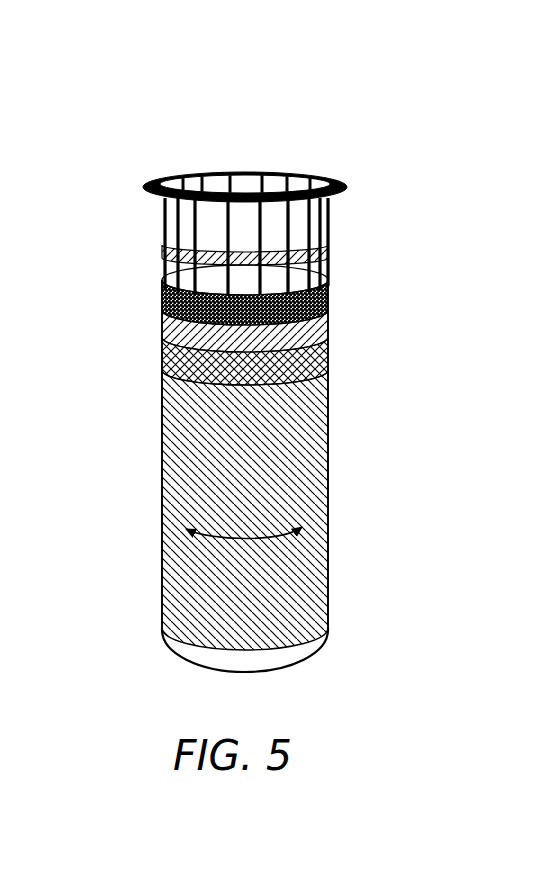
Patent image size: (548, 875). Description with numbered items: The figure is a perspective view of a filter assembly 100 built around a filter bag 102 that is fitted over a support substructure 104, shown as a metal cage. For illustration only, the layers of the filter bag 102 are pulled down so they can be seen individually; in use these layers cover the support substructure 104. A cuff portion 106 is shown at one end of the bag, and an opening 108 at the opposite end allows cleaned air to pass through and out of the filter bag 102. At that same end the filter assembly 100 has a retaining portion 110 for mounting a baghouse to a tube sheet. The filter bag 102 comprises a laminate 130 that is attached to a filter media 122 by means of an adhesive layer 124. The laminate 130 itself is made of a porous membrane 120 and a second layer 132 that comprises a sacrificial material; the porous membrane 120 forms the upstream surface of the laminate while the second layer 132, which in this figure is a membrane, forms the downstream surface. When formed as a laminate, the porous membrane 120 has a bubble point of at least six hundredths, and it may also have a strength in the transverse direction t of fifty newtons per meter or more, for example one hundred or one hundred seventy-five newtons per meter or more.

The filter assembly 100 is at (301, 96).
The filter bag 102 is at (100, 321).
The support substructure 104 is at (331, 224).
The cuff portion 106 is at (329, 630).
The opening 108 is at (244, 160).
The retaining portion 110 is at (342, 182).
The porous membrane 120 is at (329, 480).
The filter media 122 is at (331, 279).
The adhesive layer 124 is at (331, 318).
The laminate 130 is at (124, 417).
The second layer 132 is at (331, 357).
The transverse direction t is at (272, 538).